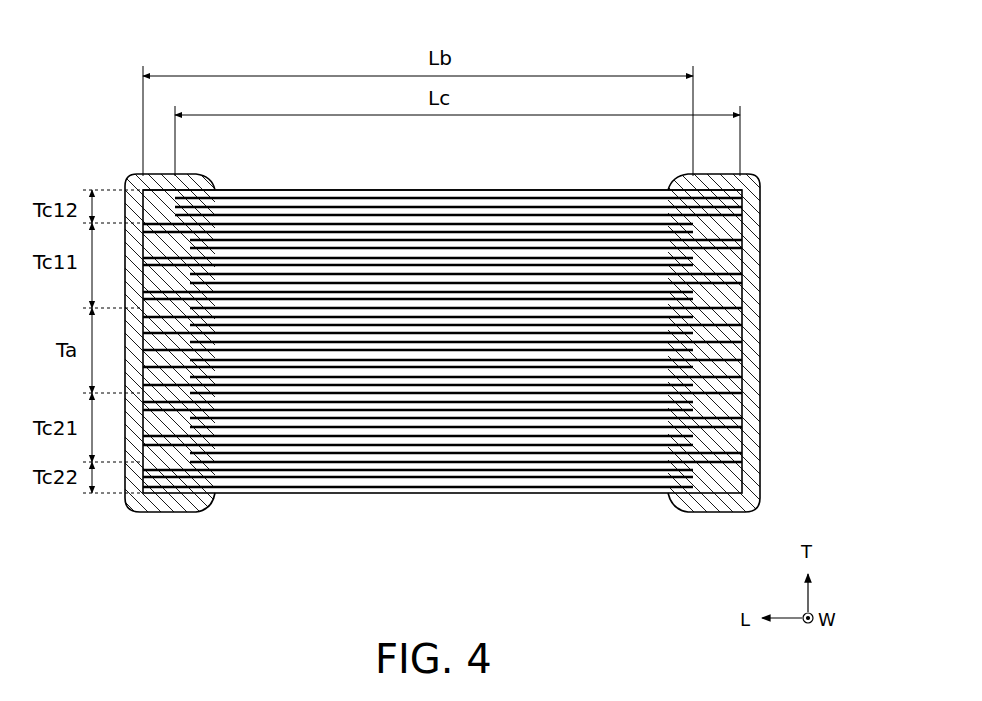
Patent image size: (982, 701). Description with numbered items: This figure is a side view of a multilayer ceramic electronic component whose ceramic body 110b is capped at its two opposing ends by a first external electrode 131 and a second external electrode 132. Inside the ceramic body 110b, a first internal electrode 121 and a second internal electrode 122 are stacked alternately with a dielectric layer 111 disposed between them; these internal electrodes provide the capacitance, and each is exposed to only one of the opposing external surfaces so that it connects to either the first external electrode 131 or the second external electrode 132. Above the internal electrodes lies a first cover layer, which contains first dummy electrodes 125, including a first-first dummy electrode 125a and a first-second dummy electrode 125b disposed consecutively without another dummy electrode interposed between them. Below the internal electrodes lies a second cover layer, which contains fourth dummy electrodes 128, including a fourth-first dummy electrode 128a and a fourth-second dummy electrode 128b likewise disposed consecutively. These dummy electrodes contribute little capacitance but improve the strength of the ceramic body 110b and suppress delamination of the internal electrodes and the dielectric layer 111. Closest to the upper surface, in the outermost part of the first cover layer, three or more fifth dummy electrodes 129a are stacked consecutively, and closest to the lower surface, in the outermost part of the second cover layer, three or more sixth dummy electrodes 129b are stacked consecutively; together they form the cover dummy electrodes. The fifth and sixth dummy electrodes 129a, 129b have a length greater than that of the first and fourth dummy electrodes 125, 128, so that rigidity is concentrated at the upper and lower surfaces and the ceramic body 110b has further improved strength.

The ceramic body 110b is at (441, 184).
The dielectric layer 111 is at (700, 288).
The first internal electrode 121 is at (695, 300).
The second internal electrode 122 is at (705, 312).
The first dummy electrodes 125 is at (515, 259).
The 1-1-th dummy electrode 125a is at (700, 226).
The 1-2-th dummy electrode 125b is at (705, 247).
The fourth dummy electrodes 128 is at (515, 444).
The 4-1-th dummy electrode 128a is at (716, 478).
The 4-2-th dummy electrode 128b is at (718, 486).
The fifth dummy electrodes 129a is at (755, 195).
The sixth dummy electrodes 129b is at (745, 482).
The first external electrode 131 is at (137, 175).
The second external electrode 132 is at (745, 175).